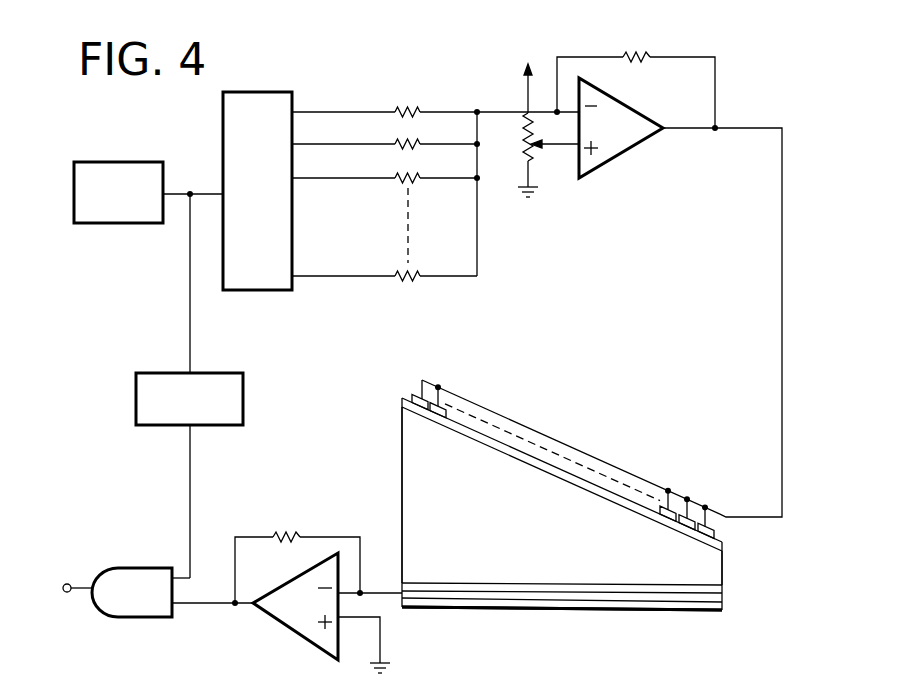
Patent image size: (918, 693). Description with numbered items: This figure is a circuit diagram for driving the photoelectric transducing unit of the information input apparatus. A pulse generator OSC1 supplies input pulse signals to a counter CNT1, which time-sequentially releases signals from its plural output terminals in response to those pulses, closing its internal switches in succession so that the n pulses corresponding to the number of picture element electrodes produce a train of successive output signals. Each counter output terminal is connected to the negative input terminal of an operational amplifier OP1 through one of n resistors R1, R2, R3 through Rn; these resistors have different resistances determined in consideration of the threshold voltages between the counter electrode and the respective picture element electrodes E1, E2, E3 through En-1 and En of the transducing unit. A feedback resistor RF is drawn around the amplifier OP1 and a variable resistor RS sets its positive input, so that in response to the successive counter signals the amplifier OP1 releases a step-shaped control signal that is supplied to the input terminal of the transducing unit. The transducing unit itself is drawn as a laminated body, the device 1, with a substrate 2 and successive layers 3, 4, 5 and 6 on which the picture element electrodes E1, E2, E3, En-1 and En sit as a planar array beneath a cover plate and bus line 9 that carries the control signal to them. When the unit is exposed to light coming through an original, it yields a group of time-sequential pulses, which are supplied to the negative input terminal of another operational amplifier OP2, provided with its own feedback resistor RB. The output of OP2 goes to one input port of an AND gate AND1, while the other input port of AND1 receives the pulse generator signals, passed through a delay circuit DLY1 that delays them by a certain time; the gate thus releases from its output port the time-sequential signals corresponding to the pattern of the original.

The liquid crystal display device 1 is at (392, 474).
The substrate layer 2 is at (722, 607).
The layer 3 is at (722, 598).
The layer 4 is at (722, 590).
The body layer 5 is at (722, 566).
The top layer 6 is at (722, 545).
The cover plate with bus line 9 is at (409, 377).
The picture element electrode E1 is at (706, 540).
The picture element electrode E2 is at (687, 531).
The picture element electrode E3 is at (664, 519).
The picture element electrode En is at (418, 410).
The picture element electrode En-1 is at (438, 419).
The resistor R1 is at (395, 112).
The resistor R2 is at (395, 144).
The resistor R3 is at (395, 178).
The resistor Rn is at (395, 276).
The feedback resistor RF is at (645, 62).
The variable resistor RS is at (533, 155).
The feedback resistor RB is at (287, 531).
The operational amplifier OP1 is at (621, 128).
The operational amplifier OP2 is at (295, 606).
The counter CNT1 is at (258, 290).
The pulse generator OSC1 is at (120, 223).
The delay circuit DLY1 is at (243, 400).
The AND gate AND1 is at (117, 592).